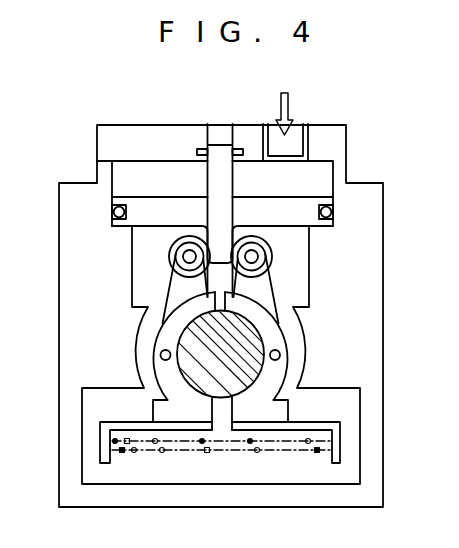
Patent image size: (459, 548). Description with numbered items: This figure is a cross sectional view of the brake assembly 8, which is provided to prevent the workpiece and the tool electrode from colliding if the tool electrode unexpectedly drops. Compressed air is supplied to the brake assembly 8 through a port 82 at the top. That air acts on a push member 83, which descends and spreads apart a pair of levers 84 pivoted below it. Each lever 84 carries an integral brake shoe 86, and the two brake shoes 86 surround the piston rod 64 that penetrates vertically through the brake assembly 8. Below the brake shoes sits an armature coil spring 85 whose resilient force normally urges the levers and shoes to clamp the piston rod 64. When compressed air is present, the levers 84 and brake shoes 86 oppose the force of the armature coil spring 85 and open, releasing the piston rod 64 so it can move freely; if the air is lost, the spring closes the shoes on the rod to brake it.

The brake assembly 8 is at (122, 104).
The port 82 is at (300, 128).
The push member 83 is at (136, 203).
The levers 84 is at (272, 285).
The brake shoes 86 is at (283, 328).
The piston rod 64 is at (263, 365).
The armature coil spring 85 is at (222, 455).